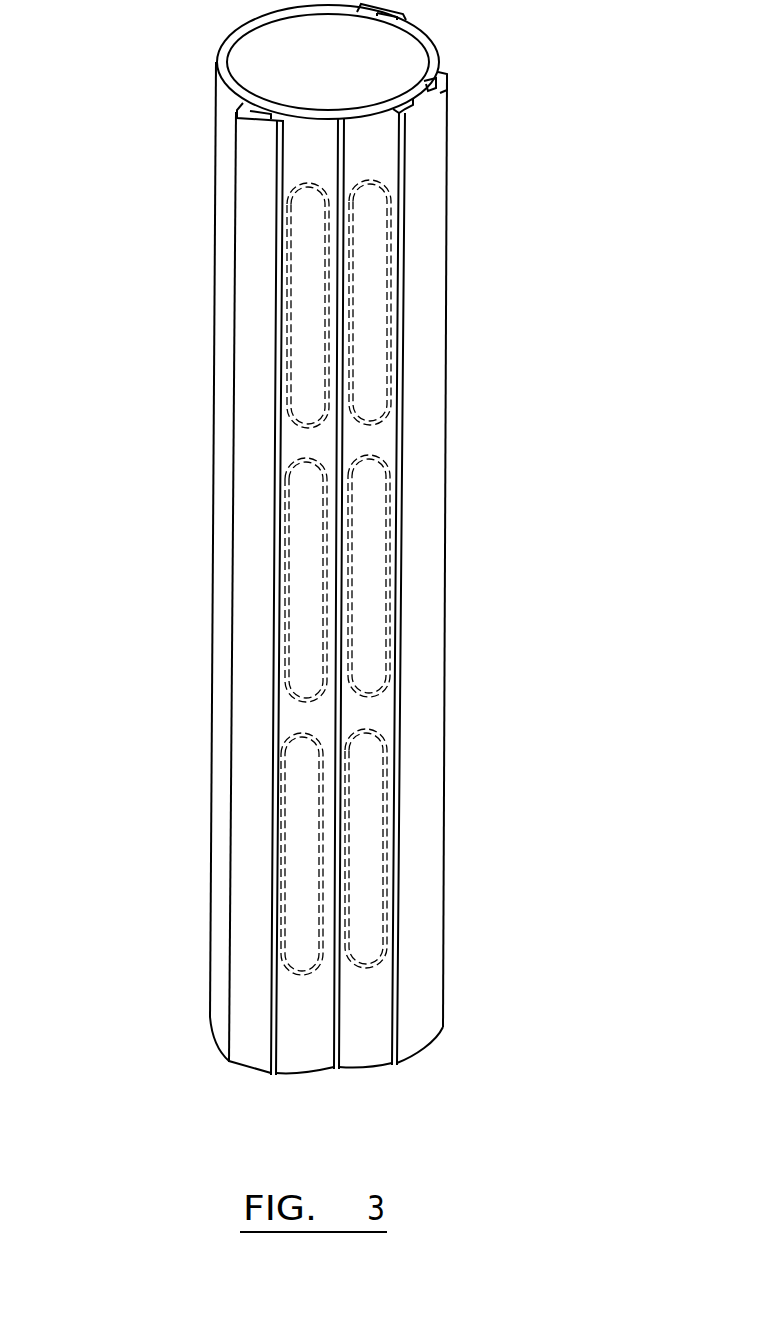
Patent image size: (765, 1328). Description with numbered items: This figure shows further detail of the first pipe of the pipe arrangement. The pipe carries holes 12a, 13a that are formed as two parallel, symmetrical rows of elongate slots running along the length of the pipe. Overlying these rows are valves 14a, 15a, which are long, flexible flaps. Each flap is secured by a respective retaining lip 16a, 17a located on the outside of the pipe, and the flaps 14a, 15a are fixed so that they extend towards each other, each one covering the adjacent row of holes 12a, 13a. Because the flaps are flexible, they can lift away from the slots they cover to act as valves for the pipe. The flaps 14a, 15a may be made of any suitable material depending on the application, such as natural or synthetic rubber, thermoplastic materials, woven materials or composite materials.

The holes 12a is at (367, 577).
The holes 13a is at (310, 287).
The valve 14a is at (372, 152).
The valve 15a is at (308, 156).
The retaining lip 16a is at (423, 855).
The retaining lip 17a is at (250, 928).